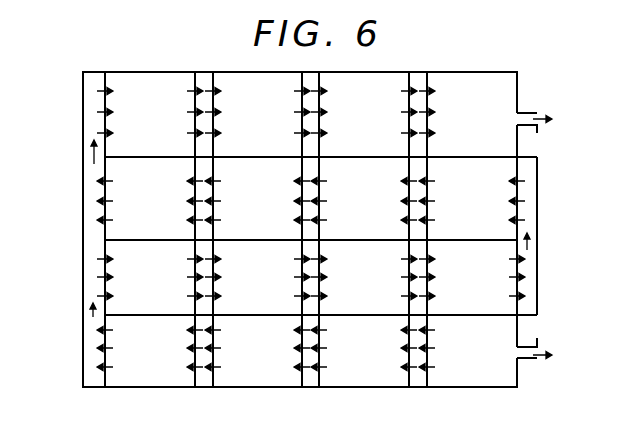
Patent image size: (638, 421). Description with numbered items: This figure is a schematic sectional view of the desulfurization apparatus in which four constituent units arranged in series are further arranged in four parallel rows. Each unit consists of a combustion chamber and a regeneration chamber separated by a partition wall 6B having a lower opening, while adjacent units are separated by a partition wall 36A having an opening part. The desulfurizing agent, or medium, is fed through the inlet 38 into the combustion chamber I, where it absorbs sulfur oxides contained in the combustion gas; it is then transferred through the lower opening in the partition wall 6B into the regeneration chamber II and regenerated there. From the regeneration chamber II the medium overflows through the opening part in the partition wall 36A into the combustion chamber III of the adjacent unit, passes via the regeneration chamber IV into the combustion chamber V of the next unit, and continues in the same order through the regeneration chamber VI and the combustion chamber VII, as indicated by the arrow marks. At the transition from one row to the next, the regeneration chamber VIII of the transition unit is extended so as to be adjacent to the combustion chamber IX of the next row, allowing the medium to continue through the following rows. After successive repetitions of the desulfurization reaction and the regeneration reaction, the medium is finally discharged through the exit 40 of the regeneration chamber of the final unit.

The exit 40 is at (524, 115).
The inlet 38 is at (527, 362).
The partition wall 36A is at (299, 385).
The partition wall 6B is at (319, 387).
The combustion chamber I is at (460, 354).
The regeneration chamber II is at (421, 360).
The combustion chamber III is at (350, 354).
The regeneration chamber IV is at (309, 359).
The combustion chamber V is at (244, 353).
The regeneration chamber VI is at (209, 358).
The combustion chamber VII is at (131, 353).
The regeneration chamber VIII is at (86, 322).
The combustion chamber IX is at (138, 284).